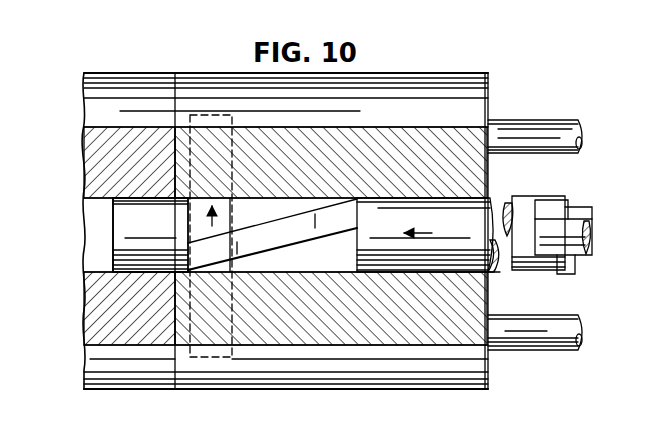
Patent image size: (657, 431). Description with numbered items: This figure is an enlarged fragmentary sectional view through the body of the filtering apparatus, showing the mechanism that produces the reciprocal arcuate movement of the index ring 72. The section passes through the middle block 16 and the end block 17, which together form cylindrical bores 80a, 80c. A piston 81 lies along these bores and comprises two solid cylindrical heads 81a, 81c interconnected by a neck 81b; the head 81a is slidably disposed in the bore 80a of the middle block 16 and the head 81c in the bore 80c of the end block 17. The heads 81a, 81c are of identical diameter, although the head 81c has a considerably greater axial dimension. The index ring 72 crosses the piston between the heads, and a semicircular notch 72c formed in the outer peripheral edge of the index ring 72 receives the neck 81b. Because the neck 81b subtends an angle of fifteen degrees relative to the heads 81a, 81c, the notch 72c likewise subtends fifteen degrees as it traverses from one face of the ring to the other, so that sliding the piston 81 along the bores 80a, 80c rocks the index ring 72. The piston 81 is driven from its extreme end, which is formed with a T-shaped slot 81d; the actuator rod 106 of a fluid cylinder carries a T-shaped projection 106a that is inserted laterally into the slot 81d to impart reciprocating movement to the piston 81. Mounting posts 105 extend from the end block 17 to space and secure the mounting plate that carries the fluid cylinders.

The middle block 16 is at (122, 93).
The end block 17 is at (408, 82).
The index ring 72 is at (233, 358).
The semicircular notch 72c is at (215, 259).
The cylindrical bore 80a is at (100, 252).
The cylindrical bore 80c is at (343, 266).
The piston 81 is at (444, 222).
The piston head 81a is at (166, 230).
The neck 81b is at (292, 225).
The piston head 81c is at (520, 273).
The T-shaped slot 81d is at (545, 214).
The mounting posts 105 is at (526, 128).
The actuator rod 106 is at (590, 228).
The T-shaped projection 106a is at (562, 263).